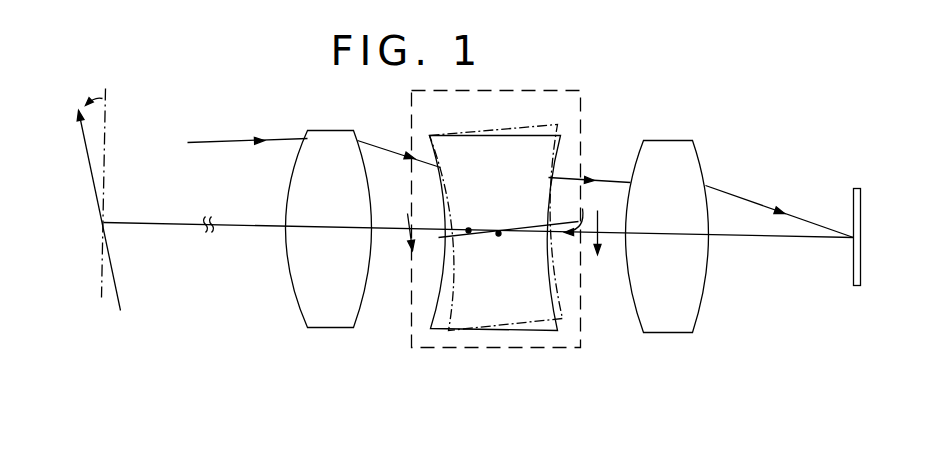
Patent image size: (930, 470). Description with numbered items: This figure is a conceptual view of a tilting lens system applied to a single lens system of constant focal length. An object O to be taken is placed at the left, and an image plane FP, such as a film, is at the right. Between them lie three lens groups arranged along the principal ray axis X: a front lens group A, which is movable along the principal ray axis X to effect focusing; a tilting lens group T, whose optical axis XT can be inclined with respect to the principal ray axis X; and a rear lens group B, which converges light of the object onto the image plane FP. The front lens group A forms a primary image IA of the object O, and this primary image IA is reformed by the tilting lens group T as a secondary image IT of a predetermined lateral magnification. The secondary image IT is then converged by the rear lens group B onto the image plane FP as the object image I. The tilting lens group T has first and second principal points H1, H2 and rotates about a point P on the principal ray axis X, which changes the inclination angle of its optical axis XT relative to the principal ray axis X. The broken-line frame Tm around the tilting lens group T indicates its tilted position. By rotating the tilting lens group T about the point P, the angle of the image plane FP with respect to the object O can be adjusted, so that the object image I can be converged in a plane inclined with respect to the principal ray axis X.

The object O is at (120, 310).
The principal ray axis X is at (115, 220).
The front lens group A is at (325, 330).
The primary image IA is at (410, 238).
The tilt lens movable range Tm is at (437, 348).
The tilting lens group T is at (483, 330).
The point on the principal ray axis P is at (468, 230).
The optical axis of the tilting lens group XT is at (522, 228).
The first principal point H1 is at (497, 234).
The second principal point H2 is at (520, 233).
The secondary image IT is at (607, 243).
The rear lens group B is at (673, 333).
The image plane FP is at (853, 190).
The object image I is at (825, 272).